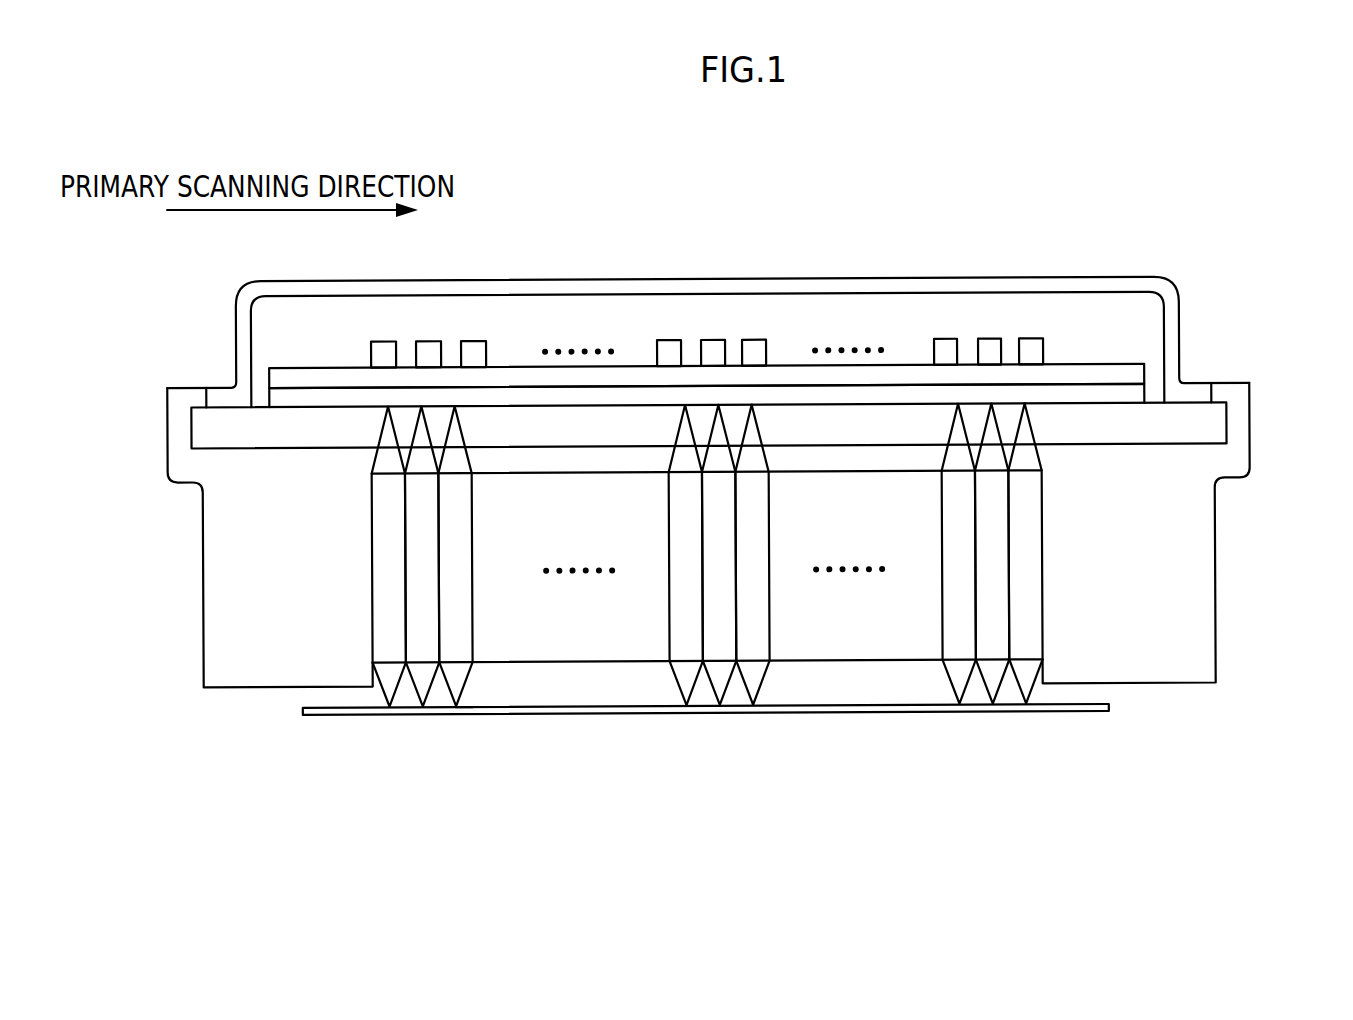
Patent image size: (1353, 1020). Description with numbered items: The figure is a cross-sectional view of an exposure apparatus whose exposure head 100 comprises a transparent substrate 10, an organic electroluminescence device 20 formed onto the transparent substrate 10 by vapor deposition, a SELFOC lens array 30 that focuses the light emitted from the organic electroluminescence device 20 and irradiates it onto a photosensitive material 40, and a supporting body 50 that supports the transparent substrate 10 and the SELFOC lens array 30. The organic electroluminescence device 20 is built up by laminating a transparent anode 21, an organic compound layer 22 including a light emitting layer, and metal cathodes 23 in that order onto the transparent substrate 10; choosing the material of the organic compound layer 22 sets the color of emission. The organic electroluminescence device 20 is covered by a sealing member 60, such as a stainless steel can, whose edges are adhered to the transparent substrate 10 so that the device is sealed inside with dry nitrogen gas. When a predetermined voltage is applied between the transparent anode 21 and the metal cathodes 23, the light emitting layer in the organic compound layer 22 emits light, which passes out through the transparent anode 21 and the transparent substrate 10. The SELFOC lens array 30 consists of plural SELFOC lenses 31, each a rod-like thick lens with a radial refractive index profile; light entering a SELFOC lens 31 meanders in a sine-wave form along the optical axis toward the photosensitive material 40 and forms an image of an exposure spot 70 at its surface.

The exposure head 100 is at (744, 494).
The transparent substrate 10 is at (1210, 422).
The organic electroluminescence device 20 is at (706, 281).
The transparent anode 21 is at (888, 395).
The organic compound layer 22 is at (930, 377).
The metal cathodes 23 is at (947, 350).
The SELFOC lens array 30 is at (726, 625).
The SELFOC lens 31 is at (1082, 793).
The photosensitive material 40 is at (1113, 700).
The supporting body 50 is at (1185, 585).
The sealing member 60 is at (537, 288).
The exposure spot 70 is at (466, 692).